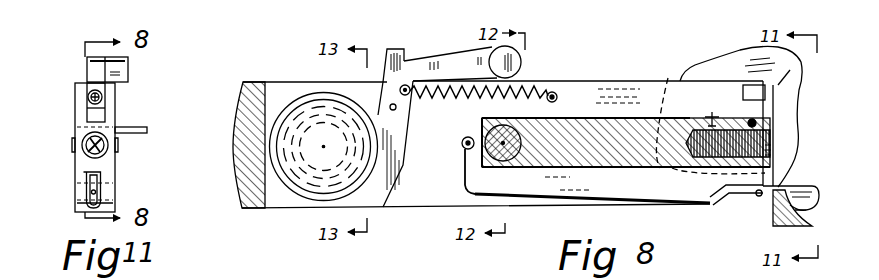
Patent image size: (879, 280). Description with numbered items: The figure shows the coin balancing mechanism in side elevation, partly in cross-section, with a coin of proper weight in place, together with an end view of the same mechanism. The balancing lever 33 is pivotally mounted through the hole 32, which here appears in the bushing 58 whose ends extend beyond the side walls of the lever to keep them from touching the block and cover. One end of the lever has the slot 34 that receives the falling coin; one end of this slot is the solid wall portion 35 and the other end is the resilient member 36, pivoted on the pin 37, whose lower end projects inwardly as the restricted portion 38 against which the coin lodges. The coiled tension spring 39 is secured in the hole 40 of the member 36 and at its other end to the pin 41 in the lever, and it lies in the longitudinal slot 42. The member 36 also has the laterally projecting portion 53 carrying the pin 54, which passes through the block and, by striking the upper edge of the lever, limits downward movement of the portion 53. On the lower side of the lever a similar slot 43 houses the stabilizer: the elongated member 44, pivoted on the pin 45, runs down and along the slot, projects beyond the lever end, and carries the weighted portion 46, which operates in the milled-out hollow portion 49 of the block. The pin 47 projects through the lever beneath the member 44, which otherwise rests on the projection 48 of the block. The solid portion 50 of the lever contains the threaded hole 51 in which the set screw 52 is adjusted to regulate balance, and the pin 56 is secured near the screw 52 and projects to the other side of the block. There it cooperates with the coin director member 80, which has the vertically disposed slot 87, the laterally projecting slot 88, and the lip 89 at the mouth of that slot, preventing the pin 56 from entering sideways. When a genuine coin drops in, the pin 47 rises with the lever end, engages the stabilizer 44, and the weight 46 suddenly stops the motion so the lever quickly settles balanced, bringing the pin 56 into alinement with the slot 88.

In FIG. 11, the hole 32 is at (72, 146).
In FIG. 8, the hole 32 is at (545, 122).
In FIG. 11, the balancing lever 33 is at (112, 158).
In FIG. 8, the balancing lever 33 is at (305, 78).
In FIG. 8, the slot 34 is at (278, 97).
In FIG. 8, the solid wall portion 35 is at (265, 82).
In FIG. 8, the resilient member 36 is at (387, 72).
In FIG. 11, the pin 37 is at (106, 106).
In FIG. 8, the pin 37 is at (390, 106).
In FIG. 8, the inwardly projecting portion 38 is at (363, 200).
In FIG. 11, the coiled tension spring 39 is at (77, 91).
In FIG. 8, the coiled tension spring 39 is at (532, 82).
In FIG. 8, the hole 40 is at (409, 96).
In FIG. 8, the pin 41 is at (558, 98).
In FIG. 11, the slot 42 is at (94, 117).
In FIG. 8, the slot 42 is at (669, 80).
In FIG. 11, the slot 43 is at (86, 178).
In FIG. 8, the slot 43 is at (468, 196).
In FIG. 11, the elongated member 44 is at (104, 178).
In FIG. 8, the elongated member 44 is at (535, 198).
In FIG. 8, the pin 45 is at (462, 144).
In FIG. 8, the weighted portion 46 is at (822, 175).
In FIG. 11, the pin 47 is at (85, 203).
In FIG. 8, the pin 47 is at (756, 197).
In FIG. 8, the projection 48 is at (793, 173).
In FIG. 8, the milled-out hollow portion 49 is at (796, 206).
In FIG. 8, the solid portion 50 is at (612, 130).
In FIG. 8, the hole 51 is at (695, 135).
In FIG. 11, the set screw 52 is at (108, 150).
In FIG. 8, the set screw 52 is at (708, 116).
In FIG. 11, the laterally projecting portion 53 is at (87, 68).
In FIG. 8, the laterally projecting portion 53 is at (419, 62).
In FIG. 11, the pin 54 is at (128, 69).
In FIG. 8, the pin 54 is at (525, 58).
In FIG. 11, the pin 56 is at (130, 127).
In FIG. 8, the pin 56 is at (768, 110).
In FIG. 8, the bushing 58 is at (485, 128).
In FIG. 8, the coin director member 80 is at (741, 116).
In FIG. 8, the vertically disposed slot 87 is at (797, 69).
In FIG. 8, the laterally projecting slot 88 is at (728, 125).
In FIG. 8, the lip 89 is at (756, 108).